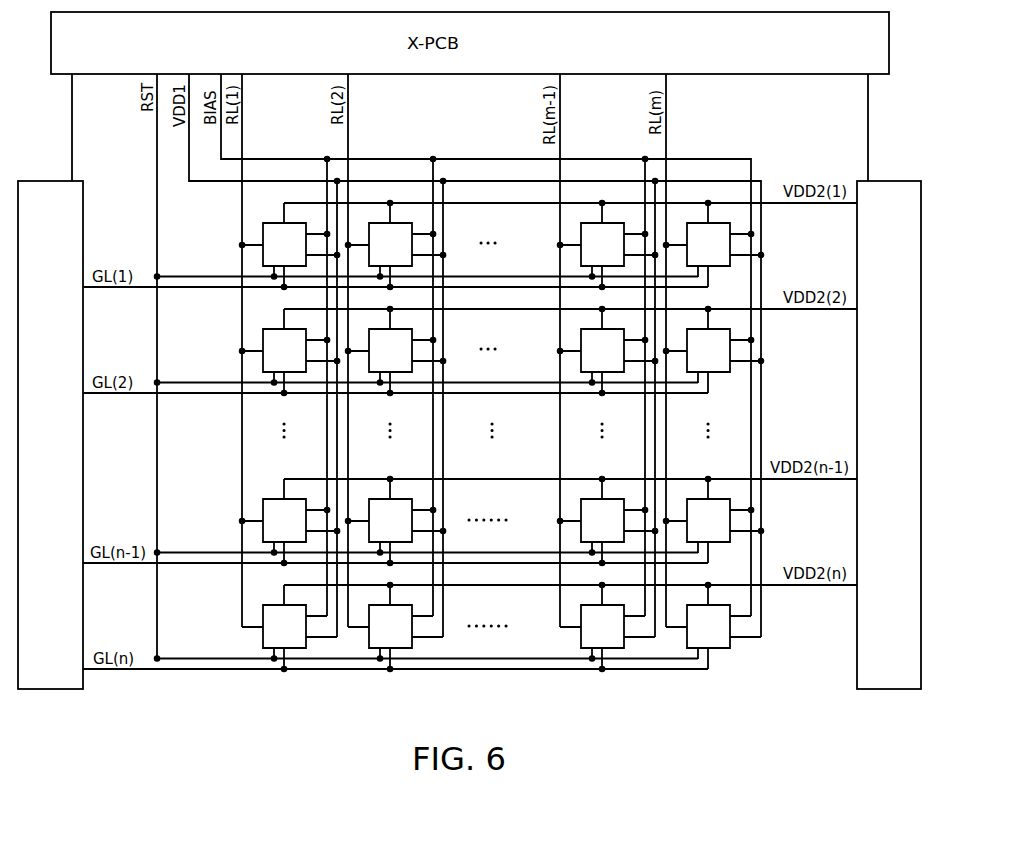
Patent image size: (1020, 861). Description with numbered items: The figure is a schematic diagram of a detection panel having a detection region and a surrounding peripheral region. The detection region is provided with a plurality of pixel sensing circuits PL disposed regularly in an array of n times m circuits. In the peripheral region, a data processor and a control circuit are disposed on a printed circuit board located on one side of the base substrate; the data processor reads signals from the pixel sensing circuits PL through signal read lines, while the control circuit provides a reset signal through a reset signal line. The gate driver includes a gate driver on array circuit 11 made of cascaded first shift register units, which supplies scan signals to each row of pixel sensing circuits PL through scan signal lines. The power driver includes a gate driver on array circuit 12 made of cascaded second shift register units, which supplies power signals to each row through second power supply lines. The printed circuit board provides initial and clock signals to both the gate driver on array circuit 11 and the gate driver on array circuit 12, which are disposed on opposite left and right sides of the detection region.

The gate driver on array (GOA) circuit 11 is at (25, 181).
The GOA circuit 12 is at (888, 181).
The pixel sensing circuit PL is at (260, 234).